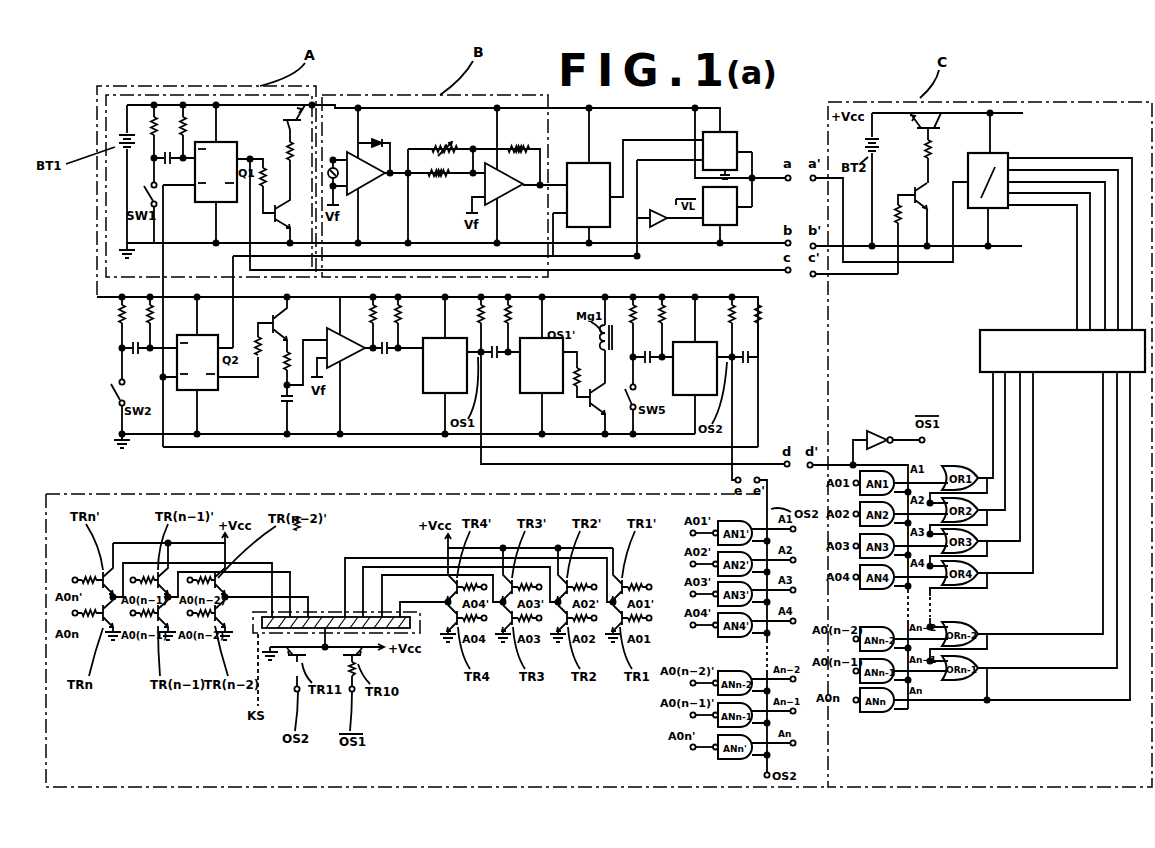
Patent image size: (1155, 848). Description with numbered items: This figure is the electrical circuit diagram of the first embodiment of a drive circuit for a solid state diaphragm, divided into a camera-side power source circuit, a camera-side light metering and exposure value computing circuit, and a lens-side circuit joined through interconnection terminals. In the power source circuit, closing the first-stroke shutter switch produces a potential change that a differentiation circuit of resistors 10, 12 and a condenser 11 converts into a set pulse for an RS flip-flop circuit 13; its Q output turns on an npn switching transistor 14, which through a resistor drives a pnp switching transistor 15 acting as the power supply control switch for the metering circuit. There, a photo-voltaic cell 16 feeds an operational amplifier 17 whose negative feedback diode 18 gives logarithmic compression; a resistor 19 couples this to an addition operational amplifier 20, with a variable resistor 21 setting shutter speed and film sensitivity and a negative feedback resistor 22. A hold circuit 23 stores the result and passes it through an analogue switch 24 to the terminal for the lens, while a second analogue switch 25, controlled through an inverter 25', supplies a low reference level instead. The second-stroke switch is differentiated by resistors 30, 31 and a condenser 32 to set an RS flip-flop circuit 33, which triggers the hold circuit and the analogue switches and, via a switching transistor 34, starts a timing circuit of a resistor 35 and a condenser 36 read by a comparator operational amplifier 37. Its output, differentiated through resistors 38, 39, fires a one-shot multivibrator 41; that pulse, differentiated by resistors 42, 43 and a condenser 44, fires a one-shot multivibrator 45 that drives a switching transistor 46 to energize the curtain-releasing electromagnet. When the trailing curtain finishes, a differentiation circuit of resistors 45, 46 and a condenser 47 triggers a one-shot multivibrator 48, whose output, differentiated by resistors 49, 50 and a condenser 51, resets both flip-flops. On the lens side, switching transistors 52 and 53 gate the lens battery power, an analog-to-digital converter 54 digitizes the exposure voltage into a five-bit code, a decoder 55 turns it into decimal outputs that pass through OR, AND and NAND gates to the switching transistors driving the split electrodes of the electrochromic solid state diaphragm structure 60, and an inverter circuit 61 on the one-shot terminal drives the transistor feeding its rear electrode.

The resistor 10 is at (156, 135).
The condenser 11 is at (174, 168).
The resistor 12 is at (185, 135).
The RS flip-flop circuit 13 is at (216, 172).
The npn type switching transistor 14 is at (283, 223).
The pnp type switching transistor 15 is at (284, 125).
The photo-voltaic cell 16 is at (332, 168).
The operational amplifier 17 is at (366, 174).
The diode 18 is at (382, 139).
The resistor 19 is at (440, 182).
The operational amplifier 20 is at (504, 184).
The variable resistor 21 is at (445, 144).
The negative feedback resistor 22 is at (522, 144).
The hold circuit 23 is at (588, 195).
The analogue switch 24 is at (720, 151).
The analogue switch 25 is at (720, 206).
The inverter 25' is at (670, 228).
The resistor 30 is at (117, 323).
The resistor 31 is at (146, 325).
The condenser 32 is at (134, 358).
The RS flip-flop circuit 33 is at (197, 362).
The switching transistor 34 is at (249, 350).
The resistor 35 is at (283, 372).
The condenser 36 is at (281, 406).
The operational amplifier 37 is at (346, 348).
The resistor 38 is at (369, 330).
The resistor 39 is at (400, 324).
The one-shot multivibrator 41 is at (452, 393).
The resistor 42 is at (477, 328).
The resistor 43 is at (510, 324).
The condenser 44 is at (496, 361).
The one-shot multivibrator 45 is at (538, 394).
The switching transistor 46 is at (587, 416).
The condenser 47 is at (648, 364).
The one-shot multivibrator 48 is at (688, 395).
The resistor 49 is at (725, 322).
The resistor 50 is at (762, 323).
The condenser 51 is at (745, 365).
The switching transistor 52 is at (910, 189).
The switching transistor 53 is at (936, 130).
The analog-to-digital converter 54 is at (998, 208).
The decoder 55 is at (1062, 351).
The solid state diaphragm structure 60 is at (416, 634).
The inverter circuit 61 is at (876, 431).